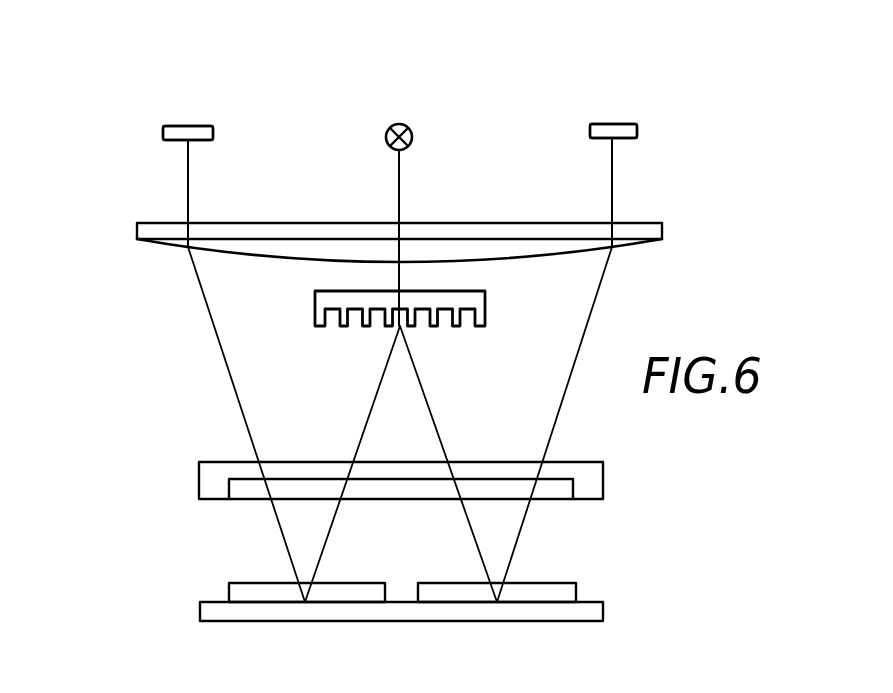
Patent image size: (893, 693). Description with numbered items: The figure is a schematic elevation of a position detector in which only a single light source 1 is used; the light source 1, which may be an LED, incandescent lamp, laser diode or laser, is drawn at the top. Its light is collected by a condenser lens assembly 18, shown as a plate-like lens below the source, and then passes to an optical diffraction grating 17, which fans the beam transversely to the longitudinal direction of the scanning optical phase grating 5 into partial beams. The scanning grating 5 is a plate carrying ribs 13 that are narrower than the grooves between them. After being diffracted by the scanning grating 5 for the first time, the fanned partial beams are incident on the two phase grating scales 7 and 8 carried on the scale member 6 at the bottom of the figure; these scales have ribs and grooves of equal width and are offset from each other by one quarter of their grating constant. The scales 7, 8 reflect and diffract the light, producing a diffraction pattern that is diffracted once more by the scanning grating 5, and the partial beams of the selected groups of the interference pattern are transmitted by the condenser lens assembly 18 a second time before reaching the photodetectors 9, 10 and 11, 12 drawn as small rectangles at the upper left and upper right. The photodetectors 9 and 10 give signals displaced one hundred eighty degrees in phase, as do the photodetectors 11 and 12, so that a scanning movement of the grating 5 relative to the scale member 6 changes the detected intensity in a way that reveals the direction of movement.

The light source 1 is at (403, 121).
The scanning optical phase grating 5 is at (233, 465).
The scale member 6 is at (590, 608).
The phase grating scale 7 is at (257, 590).
The phase grating scale 8 is at (552, 590).
The photodetector 9 is at (178, 127).
The photodetector 10 is at (188, 133).
The photodetector 11 is at (608, 123).
The photodetector 12 is at (613, 131).
The ribs 13 is at (253, 487).
The optical diffraction grating 17 is at (477, 301).
The condenser lens assembly 18 is at (160, 232).